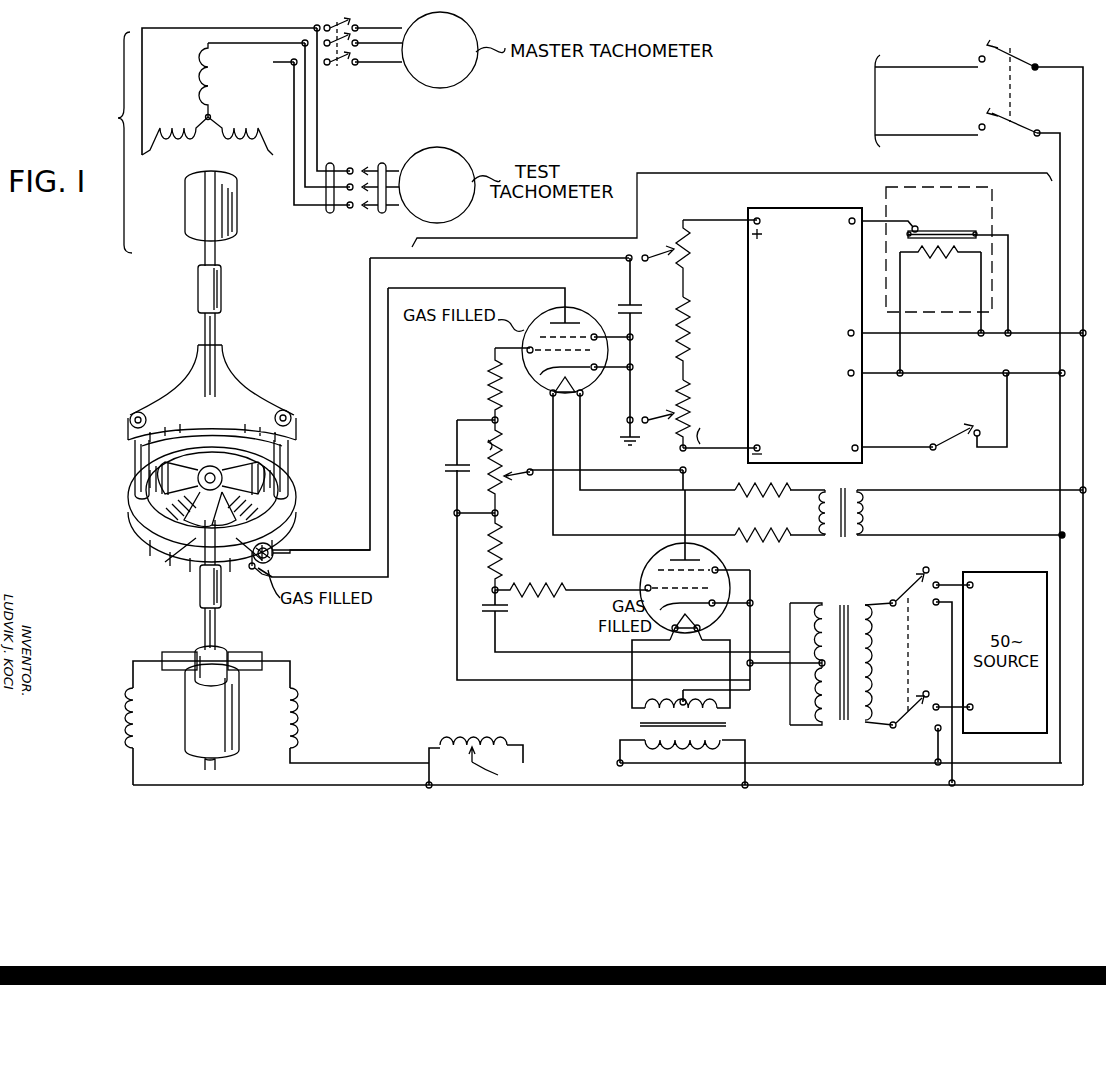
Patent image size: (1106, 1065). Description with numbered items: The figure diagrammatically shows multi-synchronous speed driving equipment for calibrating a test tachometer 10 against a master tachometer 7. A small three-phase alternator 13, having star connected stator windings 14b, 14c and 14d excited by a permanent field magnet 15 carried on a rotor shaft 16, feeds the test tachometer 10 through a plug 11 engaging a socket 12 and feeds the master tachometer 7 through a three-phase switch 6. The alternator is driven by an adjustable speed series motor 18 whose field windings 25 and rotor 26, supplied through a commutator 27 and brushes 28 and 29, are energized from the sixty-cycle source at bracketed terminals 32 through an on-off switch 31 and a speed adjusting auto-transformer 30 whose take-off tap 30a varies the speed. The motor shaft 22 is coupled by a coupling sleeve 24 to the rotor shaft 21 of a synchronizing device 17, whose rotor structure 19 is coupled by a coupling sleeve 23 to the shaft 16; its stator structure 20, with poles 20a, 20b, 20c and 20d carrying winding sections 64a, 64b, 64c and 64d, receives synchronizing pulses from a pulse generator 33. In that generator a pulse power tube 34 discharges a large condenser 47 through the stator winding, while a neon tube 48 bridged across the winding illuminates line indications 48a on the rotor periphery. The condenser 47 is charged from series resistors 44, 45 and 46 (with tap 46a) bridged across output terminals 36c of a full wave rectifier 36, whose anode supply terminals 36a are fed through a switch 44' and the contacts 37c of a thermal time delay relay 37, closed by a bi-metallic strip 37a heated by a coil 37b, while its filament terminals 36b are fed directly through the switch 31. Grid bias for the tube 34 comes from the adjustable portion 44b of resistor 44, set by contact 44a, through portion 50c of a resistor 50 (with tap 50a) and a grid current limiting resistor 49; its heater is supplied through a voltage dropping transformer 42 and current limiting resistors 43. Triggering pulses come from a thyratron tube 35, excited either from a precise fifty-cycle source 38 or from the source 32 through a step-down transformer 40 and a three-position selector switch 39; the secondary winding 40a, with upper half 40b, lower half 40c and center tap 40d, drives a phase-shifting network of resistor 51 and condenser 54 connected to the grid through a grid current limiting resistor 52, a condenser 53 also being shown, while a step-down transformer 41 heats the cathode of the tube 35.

The three-phase switch 6 is at (347, 70).
The master tachometer 7 is at (418, 72).
The test tachometer 10 is at (450, 155).
The plug 11 is at (385, 163).
The socket 12 is at (333, 163).
The three-phase alternator 13 is at (113, 142).
The star connected winding 14b is at (240, 128).
The star connected winding 14c is at (180, 124).
The motor winding 14d is at (203, 80).
The permanent field magnet 15 is at (185, 216).
The rotor shaft 16 is at (206, 257).
The synchronizing device 17 is at (252, 366).
The adjustable speed alternating current motor 18 is at (260, 652).
The rotor structure 19 is at (248, 405).
The stator structure 20 is at (180, 540).
The stator pole 20a is at (175, 505).
The stator pole 20b is at (150, 466).
The stator pole 20c is at (262, 458).
The stator pole 20d is at (285, 503).
The rotor shaft 21 is at (205, 330).
The power output shaft 22 is at (217, 627).
The coupling sleeve 23 is at (199, 292).
The coupling sleeve 24 is at (200, 592).
The field windings 25 is at (125, 715).
The rotor 26 is at (235, 742).
The commutator 27 is at (202, 652).
The brush 28 is at (165, 652).
The brush 29 is at (258, 654).
The speed adjusting auto-transformer 30 is at (484, 727).
The voltage take-off tap 30a is at (502, 767).
The on-off switch 31 is at (1012, 90).
The sixty-cycle alternating-current source 32 is at (875, 101).
The synchronous pulse generator 33 is at (732, 190).
The pulse power tube 34 is at (588, 392).
The four-electrode thyratron tube 35 is at (672, 566).
The full wave rectifier 36 is at (862, 414).
The anode transformer current supply terminals 36a is at (852, 447).
The filament transformer input terminals 36b is at (848, 373).
The output terminals 36c is at (773, 336).
The thermal time delay relay 37 is at (996, 206).
The compensating bi-metallic strip 37a is at (958, 228).
The heating coil 37b is at (942, 258).
The contacts 37c is at (920, 226).
The fifty-cycle voltage source 38 is at (1008, 574).
The three-position selector switch 39 is at (906, 658).
The voltage step-down transformer 40 is at (839, 595).
The transformer secondary winding 40a is at (854, 651).
The upper half of secondary winding 40b is at (822, 635).
The lower half of secondary winding 40c is at (822, 700).
The center tap 40d is at (822, 665).
The voltage step-down transformer 41 is at (640, 728).
The voltage dropping transformer 42 is at (843, 488).
The current limiting resistors 43 is at (750, 530).
The resistor 44 is at (701, 411).
The contact 44a is at (668, 430).
The adjustable portion of resistor 44b is at (718, 433).
The switch 44' is at (962, 449).
The resistor 45 is at (690, 330).
The resistor 46 is at (690, 246).
The potentiometer wiper 46a is at (654, 257).
The condenser 47 is at (630, 303).
The neon tube 48 is at (275, 562).
The line indications 48a is at (250, 570).
The grid current limiting resistor 49 is at (492, 364).
The resistor 50 is at (500, 494).
The potentiometer wiper 50a is at (526, 470).
The portion of resistor 50c is at (490, 444).
The resistor 51 is at (500, 532).
The grid current limiting resistor 52 is at (556, 590).
The capacitor 53 is at (452, 478).
The condenser 54 is at (503, 612).
The stator coil 64a is at (185, 515).
The stator coil 64b is at (152, 478).
The stator coil 64c is at (268, 478).
The stator coil 64d is at (250, 520).